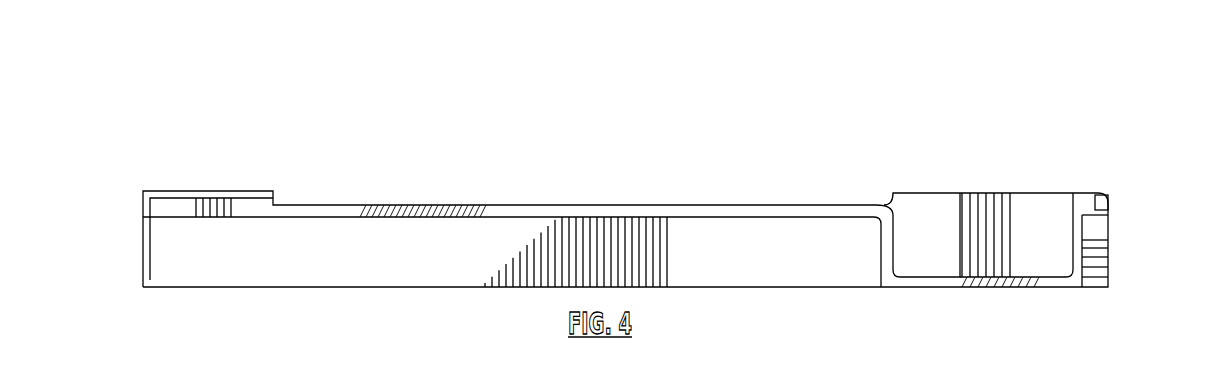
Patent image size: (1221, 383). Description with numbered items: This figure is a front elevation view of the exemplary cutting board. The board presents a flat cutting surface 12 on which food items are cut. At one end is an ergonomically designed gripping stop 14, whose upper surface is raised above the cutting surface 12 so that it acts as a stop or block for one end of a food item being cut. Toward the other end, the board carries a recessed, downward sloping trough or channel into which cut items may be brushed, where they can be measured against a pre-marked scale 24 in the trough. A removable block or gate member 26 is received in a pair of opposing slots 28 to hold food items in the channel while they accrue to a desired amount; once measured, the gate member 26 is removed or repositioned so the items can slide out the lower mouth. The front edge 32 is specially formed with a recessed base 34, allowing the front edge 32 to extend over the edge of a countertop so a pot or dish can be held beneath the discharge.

The cutting surface 12 is at (532, 203).
The gripping stop 14 is at (209, 152).
The pre-marked scale 24 is at (880, 203).
The block or gate member 26 is at (1062, 250).
The slots 28 is at (1078, 188).
The front edge 32 is at (646, 214).
The recessed base 34 is at (718, 264).